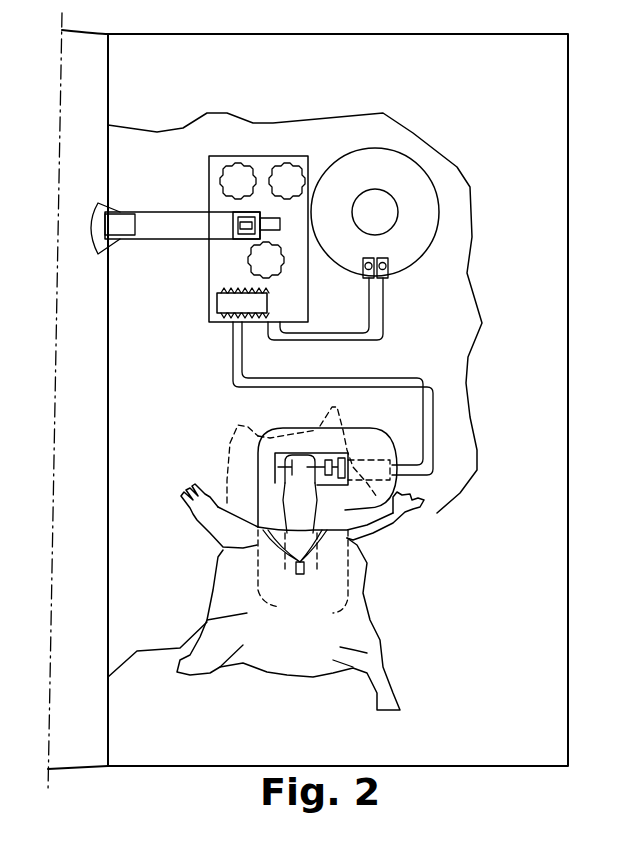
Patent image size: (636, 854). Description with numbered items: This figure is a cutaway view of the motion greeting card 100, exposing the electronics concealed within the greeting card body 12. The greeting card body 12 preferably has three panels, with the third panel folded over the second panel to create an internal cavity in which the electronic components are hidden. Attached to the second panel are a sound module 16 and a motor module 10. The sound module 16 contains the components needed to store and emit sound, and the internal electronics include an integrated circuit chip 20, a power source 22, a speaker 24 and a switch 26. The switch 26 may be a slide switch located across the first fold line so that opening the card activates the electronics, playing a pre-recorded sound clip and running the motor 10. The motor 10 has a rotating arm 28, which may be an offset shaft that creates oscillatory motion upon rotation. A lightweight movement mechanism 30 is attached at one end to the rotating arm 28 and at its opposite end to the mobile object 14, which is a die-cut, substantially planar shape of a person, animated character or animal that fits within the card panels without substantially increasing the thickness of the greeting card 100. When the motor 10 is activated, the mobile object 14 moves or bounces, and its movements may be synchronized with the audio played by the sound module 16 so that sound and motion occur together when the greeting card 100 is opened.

The motion greeting card 100 is at (318, 23).
The greeting card body 12 is at (538, 93).
The sound module 16 is at (364, 128).
The power source 22 is at (284, 181).
The switch 26 is at (236, 228).
The integrated circuit chip 20 is at (232, 303).
The speaker 24 is at (418, 222).
The motor module 10 is at (393, 440).
The rotating arm 28 is at (323, 450).
The movement mechanism 30 is at (297, 495).
The mobile object 14 is at (340, 650).